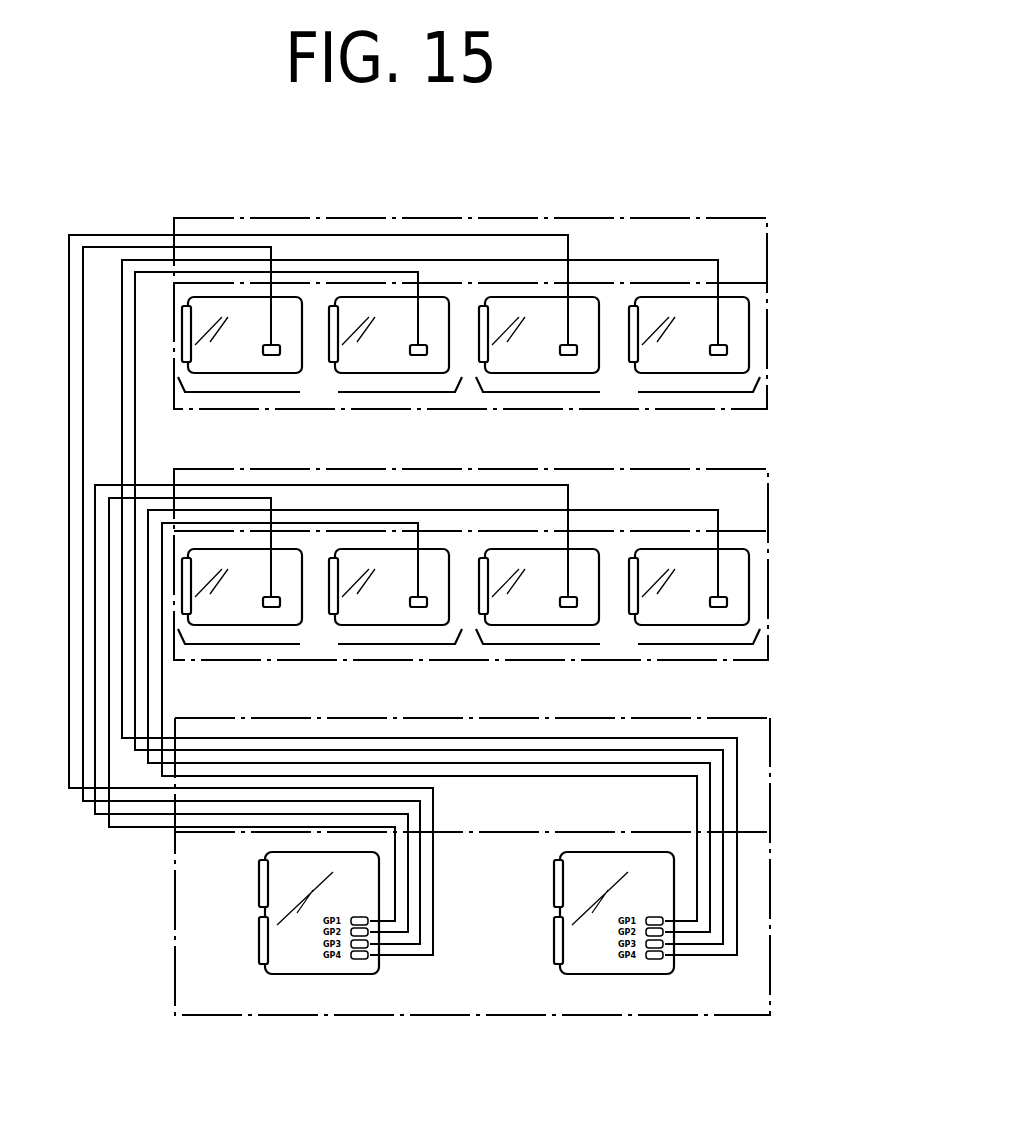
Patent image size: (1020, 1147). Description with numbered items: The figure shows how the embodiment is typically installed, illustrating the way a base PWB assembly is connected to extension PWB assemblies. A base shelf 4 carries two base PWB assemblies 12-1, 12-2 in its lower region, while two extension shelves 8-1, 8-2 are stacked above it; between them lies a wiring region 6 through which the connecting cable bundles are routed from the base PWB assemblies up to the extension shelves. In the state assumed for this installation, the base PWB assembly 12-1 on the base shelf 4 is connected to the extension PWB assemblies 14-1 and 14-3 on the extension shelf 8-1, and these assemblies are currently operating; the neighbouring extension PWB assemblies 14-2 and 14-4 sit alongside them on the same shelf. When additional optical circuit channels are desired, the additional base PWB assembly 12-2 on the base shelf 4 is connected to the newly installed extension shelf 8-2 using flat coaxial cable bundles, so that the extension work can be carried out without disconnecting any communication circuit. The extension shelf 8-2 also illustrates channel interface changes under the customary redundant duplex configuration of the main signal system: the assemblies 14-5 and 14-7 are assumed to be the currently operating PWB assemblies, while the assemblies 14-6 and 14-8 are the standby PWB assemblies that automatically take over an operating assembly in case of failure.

The base shelf 4 is at (290, 1000).
The wiring board 6 is at (290, 727).
The extension shelf 8-1 is at (467, 647).
The extension shelf 8-2 is at (468, 388).
The base PWB assembly 12-1 is at (278, 858).
The base PWB assembly 12-2 is at (595, 862).
The extension PWB assembly 14-1 is at (293, 555).
The display element 14-2 is at (433, 555).
The extension PWB assembly 14-3 is at (593, 548).
The display element 14-4 is at (737, 553).
The extension PWB assembly 14-5 is at (288, 300).
The extension PWB assembly 14-6 is at (440, 293).
The extension PWB assembly 14-7 is at (587, 302).
The extension PWB assembly 14-8 is at (738, 298).